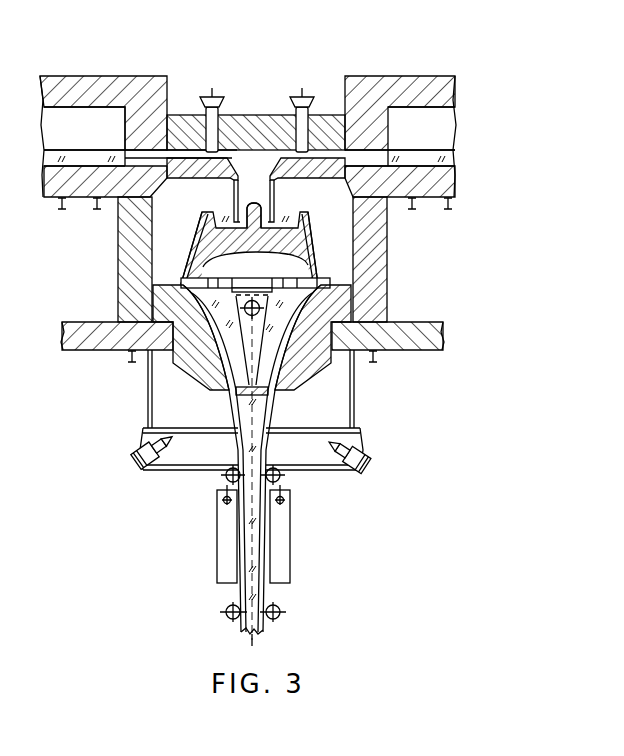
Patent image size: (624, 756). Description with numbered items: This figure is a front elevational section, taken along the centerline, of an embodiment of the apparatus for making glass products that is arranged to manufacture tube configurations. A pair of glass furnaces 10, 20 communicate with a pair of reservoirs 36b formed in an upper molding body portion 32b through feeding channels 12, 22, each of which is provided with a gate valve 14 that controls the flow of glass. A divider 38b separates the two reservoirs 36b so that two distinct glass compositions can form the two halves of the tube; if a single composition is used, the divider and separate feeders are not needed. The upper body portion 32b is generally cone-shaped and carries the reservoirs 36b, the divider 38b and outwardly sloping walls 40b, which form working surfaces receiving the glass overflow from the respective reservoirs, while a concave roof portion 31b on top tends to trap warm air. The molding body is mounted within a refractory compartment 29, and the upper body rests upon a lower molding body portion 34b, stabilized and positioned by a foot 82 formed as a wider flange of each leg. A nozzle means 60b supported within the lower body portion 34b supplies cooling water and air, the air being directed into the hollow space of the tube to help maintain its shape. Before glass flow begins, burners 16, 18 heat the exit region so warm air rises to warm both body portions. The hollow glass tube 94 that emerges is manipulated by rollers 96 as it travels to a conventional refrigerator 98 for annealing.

The glass furnace 10 is at (117, 76).
The feeding channel 12 is at (183, 158).
The gate valve 14 is at (213, 95).
The glass furnace 20 is at (426, 76).
The feeding channel 22 is at (328, 158).
The divider 38b is at (255, 201).
The reservoir 36b is at (224, 218).
The outwardly sloping wall 40b is at (318, 237).
The concave roof portion 31b is at (203, 272).
The upper molding body portion 32b is at (331, 255).
The stabilizing foot 82 is at (200, 288).
The refractory compartment 29 is at (391, 269).
The lower molding body portion 34b is at (316, 357).
The nozzle means 60b is at (236, 396).
The hollow glass tube 94 is at (272, 408).
The burner 18 is at (135, 459).
The burner 16 is at (356, 470).
The rollers 96 is at (226, 479).
The refrigerator 98 is at (299, 549).